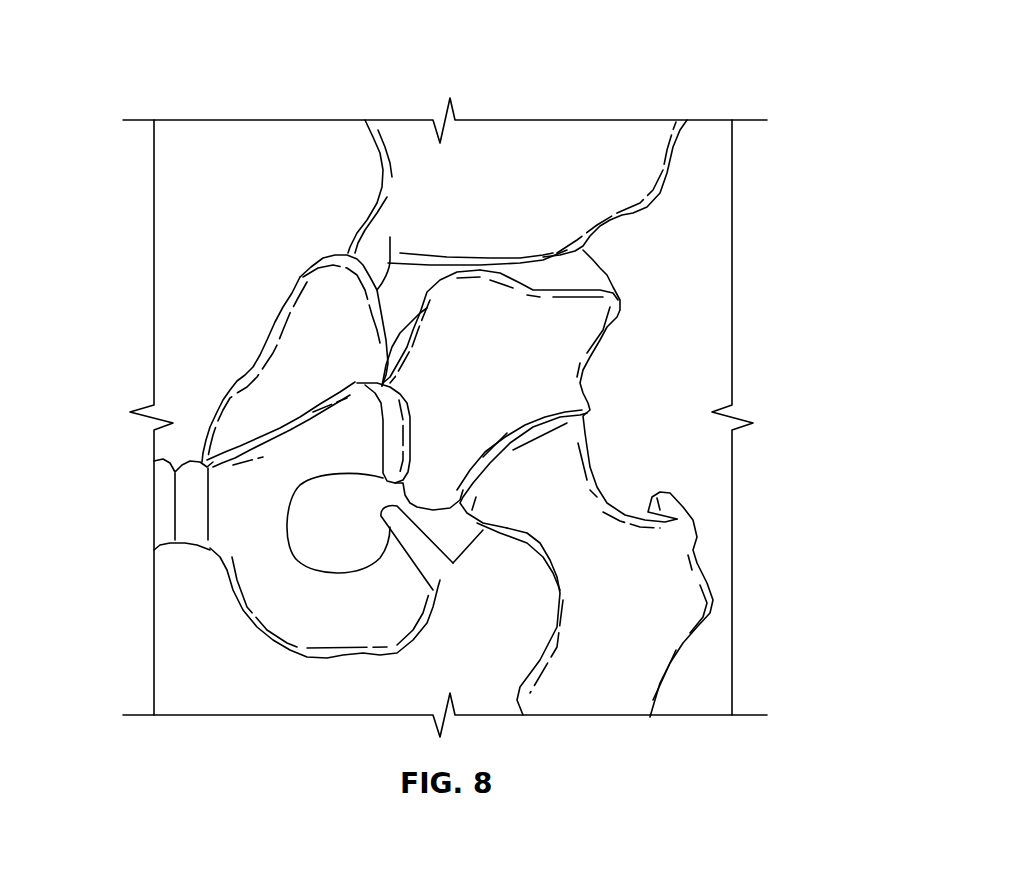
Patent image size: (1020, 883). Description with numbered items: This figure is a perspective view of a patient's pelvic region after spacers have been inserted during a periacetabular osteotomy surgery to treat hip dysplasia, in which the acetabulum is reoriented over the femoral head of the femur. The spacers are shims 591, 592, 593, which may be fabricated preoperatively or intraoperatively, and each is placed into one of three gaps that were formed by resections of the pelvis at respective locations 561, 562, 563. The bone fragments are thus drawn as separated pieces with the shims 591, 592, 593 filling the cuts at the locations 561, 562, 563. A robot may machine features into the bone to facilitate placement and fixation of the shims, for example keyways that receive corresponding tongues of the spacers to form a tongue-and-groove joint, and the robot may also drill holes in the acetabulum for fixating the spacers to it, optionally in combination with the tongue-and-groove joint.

The location 561 is at (543, 257).
The location 562 is at (405, 532).
The location 563 is at (385, 401).
The shim 591 is at (580, 273).
The shim 592 is at (400, 527).
The shim 593 is at (397, 454).